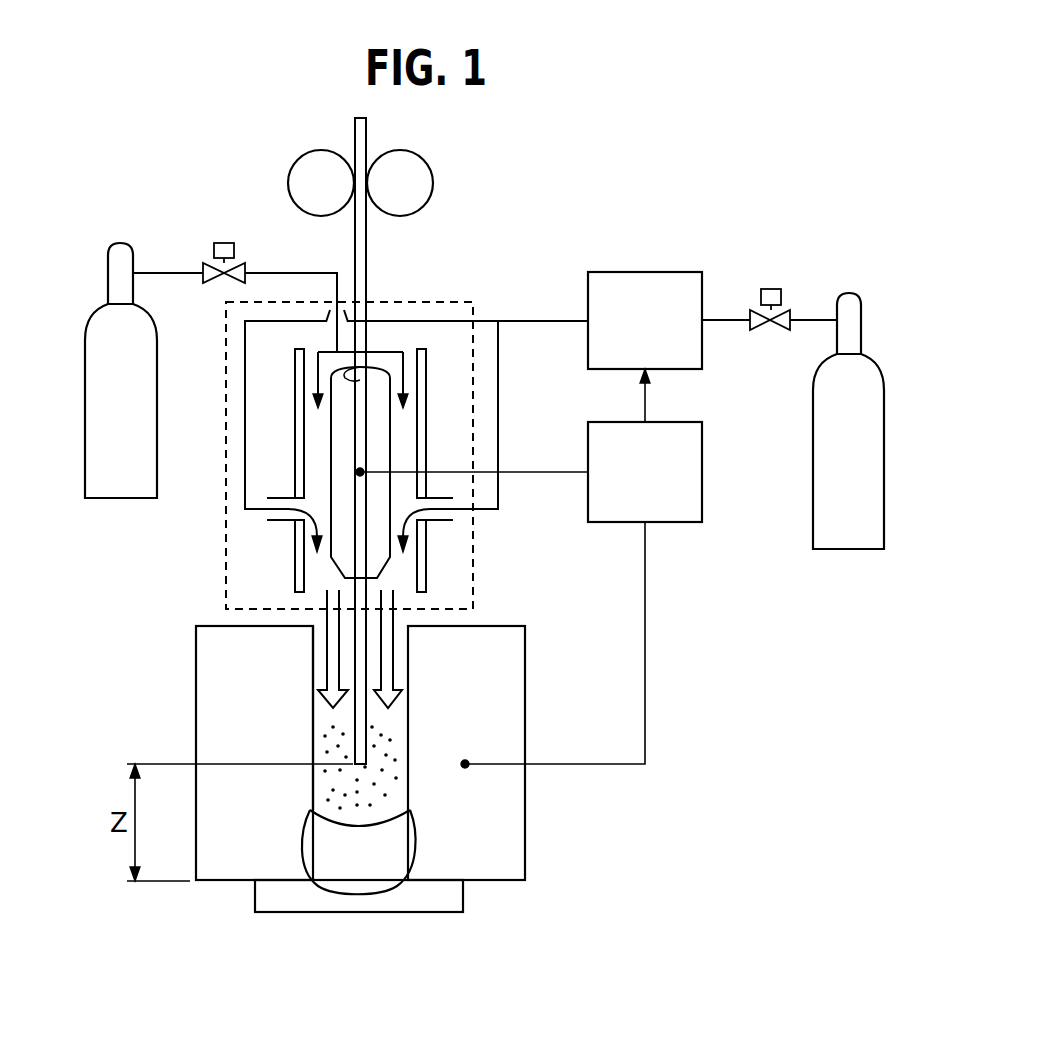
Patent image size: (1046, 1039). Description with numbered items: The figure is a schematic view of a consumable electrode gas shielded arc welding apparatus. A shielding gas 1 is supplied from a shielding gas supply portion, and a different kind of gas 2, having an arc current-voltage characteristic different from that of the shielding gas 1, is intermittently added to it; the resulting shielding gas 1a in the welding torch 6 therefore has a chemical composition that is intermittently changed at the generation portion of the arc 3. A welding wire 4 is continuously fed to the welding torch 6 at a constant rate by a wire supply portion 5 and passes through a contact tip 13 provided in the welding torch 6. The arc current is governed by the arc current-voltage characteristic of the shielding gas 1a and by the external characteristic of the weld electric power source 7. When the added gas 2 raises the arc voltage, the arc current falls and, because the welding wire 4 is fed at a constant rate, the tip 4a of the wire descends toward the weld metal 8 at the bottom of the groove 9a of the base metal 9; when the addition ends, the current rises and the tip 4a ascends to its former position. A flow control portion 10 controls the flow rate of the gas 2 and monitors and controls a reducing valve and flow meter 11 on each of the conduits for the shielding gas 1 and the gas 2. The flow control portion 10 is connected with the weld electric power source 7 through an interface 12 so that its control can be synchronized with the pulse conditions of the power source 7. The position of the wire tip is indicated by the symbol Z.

The shielding gas 1 is at (100, 328).
The shielding gas 1a is at (397, 660).
The different kind of gas 2 is at (873, 418).
The arc 3 is at (388, 790).
The welding wire 4 is at (367, 262).
The tip of the welding wire 4a is at (340, 775).
The wire supply portion 5 is at (308, 172).
The welding torch 6 is at (226, 580).
The weld electric power source 7 is at (670, 508).
The weld metal 8 is at (392, 852).
The base metal 9 is at (470, 715).
The groove 9a is at (318, 673).
The flow control portion 10 is at (672, 283).
The reducing valve and flow meter 11 is at (224, 243).
The interface 12 is at (647, 404).
The contact tip 13 is at (368, 557).